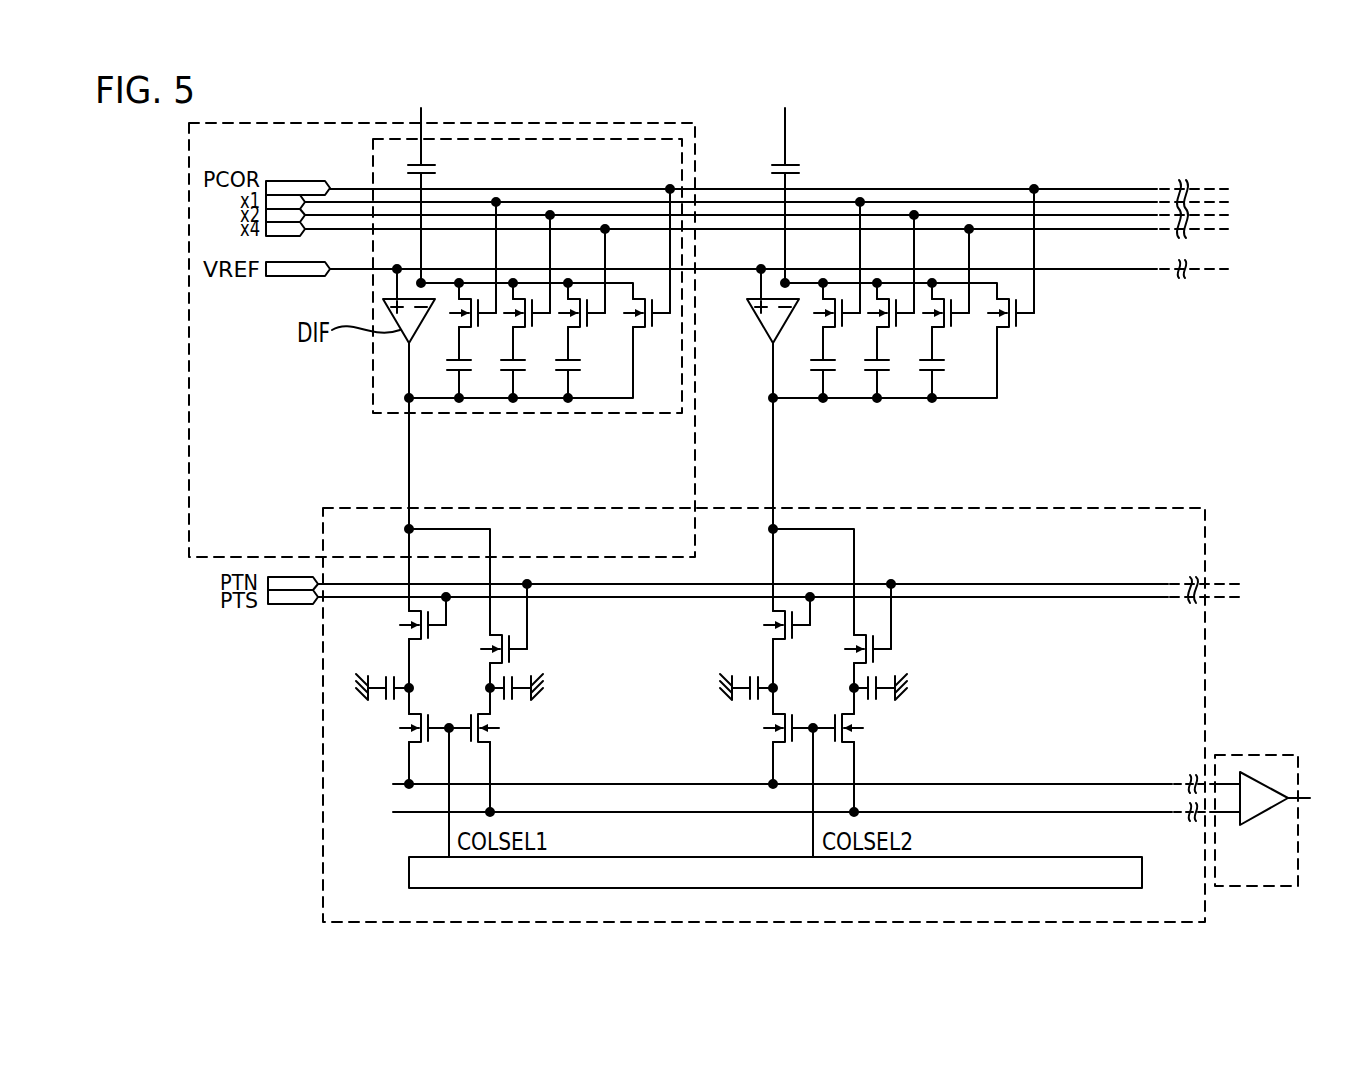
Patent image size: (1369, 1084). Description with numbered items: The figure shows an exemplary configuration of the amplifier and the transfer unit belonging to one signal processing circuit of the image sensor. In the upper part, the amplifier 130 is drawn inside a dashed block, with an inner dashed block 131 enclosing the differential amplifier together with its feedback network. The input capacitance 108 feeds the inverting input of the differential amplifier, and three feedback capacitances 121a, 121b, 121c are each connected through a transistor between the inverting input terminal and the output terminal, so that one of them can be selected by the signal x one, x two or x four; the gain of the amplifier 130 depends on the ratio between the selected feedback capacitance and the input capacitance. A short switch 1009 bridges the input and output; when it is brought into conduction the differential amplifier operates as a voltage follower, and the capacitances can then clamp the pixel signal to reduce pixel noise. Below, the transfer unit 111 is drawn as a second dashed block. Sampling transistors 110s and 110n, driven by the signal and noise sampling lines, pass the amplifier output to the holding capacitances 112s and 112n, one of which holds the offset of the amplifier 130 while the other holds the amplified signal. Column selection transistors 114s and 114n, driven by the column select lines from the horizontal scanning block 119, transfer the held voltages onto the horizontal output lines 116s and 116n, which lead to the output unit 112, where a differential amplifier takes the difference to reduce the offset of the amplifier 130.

The amplifier 130 is at (454, 123).
The amplification unit 131 is at (373, 143).
The capacitor 108 is at (437, 168).
The short switch 1009 is at (646, 330).
The feedback capacitance 121a is at (472, 374).
The feedback capacitance 121b is at (526, 374).
The feedback capacitance 121c is at (581, 374).
The transfer unit 111 is at (1100, 508).
The sampling transistor (signal) 110s is at (398, 614).
The sampling transistor (noise) 110n is at (512, 657).
The holding capacitance 112s is at (394, 680).
The holding capacitance 112n is at (506, 700).
The column selection transistor (signal) 114s is at (400, 720).
The column selection transistor (noise) 114n is at (494, 738).
The horizontal output line (signal) 116s is at (393, 784).
The horizontal output line (noise) 116n is at (393, 812).
The horizontal scanning circuit 119 is at (409, 864).
The output unit 112 is at (1264, 815).